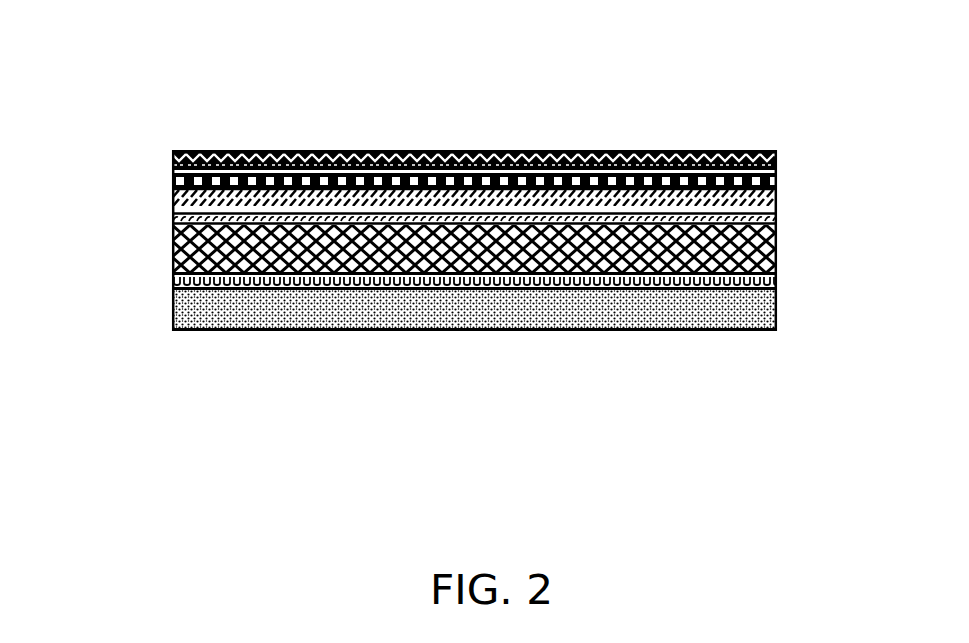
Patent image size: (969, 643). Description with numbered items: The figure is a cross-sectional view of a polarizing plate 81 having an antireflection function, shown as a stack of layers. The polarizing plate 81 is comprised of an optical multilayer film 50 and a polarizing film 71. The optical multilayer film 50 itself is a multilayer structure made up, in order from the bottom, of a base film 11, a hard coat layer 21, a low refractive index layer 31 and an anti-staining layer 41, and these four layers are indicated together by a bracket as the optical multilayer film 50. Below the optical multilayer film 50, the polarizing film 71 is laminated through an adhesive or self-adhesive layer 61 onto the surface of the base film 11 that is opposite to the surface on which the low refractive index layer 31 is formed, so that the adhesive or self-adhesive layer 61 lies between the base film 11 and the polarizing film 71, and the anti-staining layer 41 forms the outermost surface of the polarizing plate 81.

The base film 11 is at (172, 260).
The hard coat layer 21 is at (172, 203).
The low refractive index layer 31 is at (172, 176).
The anti-staining layer 41 is at (172, 152).
The optical multilayer film 50 is at (466, 180).
The adhesive or self-adhesive layer 61 is at (777, 283).
The polarizing film 71 is at (777, 313).
The polarizing plate 81 is at (466, 261).